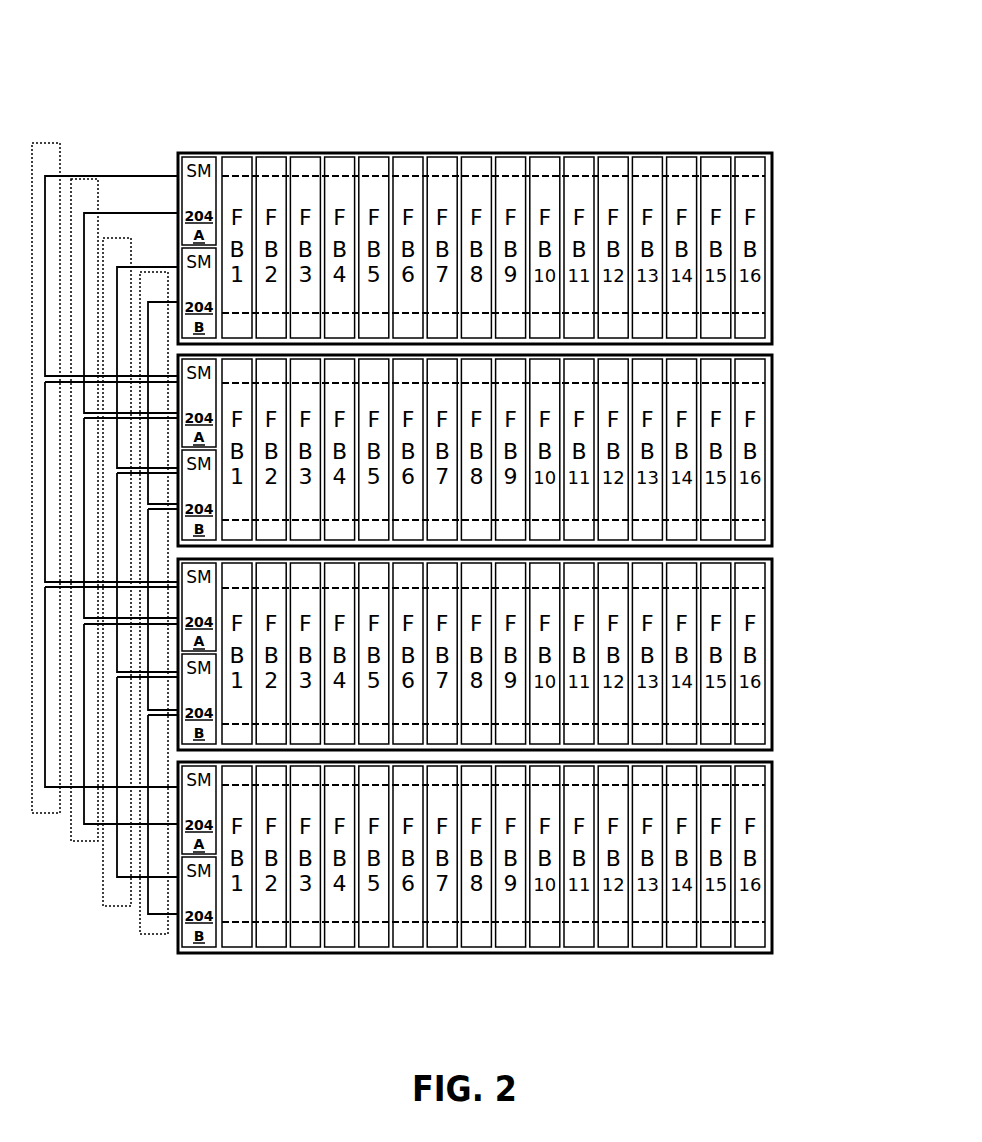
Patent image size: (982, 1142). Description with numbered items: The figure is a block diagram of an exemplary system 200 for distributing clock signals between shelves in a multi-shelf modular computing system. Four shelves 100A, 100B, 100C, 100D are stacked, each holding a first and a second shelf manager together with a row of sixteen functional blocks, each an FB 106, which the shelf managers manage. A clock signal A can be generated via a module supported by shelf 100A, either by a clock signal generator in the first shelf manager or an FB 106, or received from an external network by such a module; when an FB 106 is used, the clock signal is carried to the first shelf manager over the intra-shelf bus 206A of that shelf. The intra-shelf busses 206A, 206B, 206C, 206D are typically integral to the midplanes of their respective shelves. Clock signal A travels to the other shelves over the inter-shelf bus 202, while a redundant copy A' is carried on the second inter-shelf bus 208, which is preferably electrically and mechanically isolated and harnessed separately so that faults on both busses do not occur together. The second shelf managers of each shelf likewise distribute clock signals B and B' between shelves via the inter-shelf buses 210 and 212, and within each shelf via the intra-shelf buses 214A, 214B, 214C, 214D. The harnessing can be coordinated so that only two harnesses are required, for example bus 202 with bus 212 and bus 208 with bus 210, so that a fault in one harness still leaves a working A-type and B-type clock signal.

The system 200 is at (148, 63).
The inter-shelf bus 202 is at (45, 139).
The second inter-shelf bus 208 is at (81, 176).
The inter-shelf bus 210 is at (117, 235).
The inter-shelf bus 212 is at (152, 270).
The FB 106 is at (238, 156).
The shelf 100A is at (534, 209).
The shelf 100B is at (535, 449).
The shelf 100C is at (535, 654).
The shelf 100D is at (536, 854).
The intra-shelf bus 206A is at (756, 177).
The intra-shelf bus 206B is at (757, 382).
The intra-shelf bus 206C is at (751, 587).
The intra-shelf bus 206D is at (754, 785).
The intra-shelf bus 214A is at (756, 315).
The intra-shelf bus 214B is at (757, 518).
The intra-shelf bus 214C is at (751, 723).
The intra-shelf bus 214D is at (754, 922).